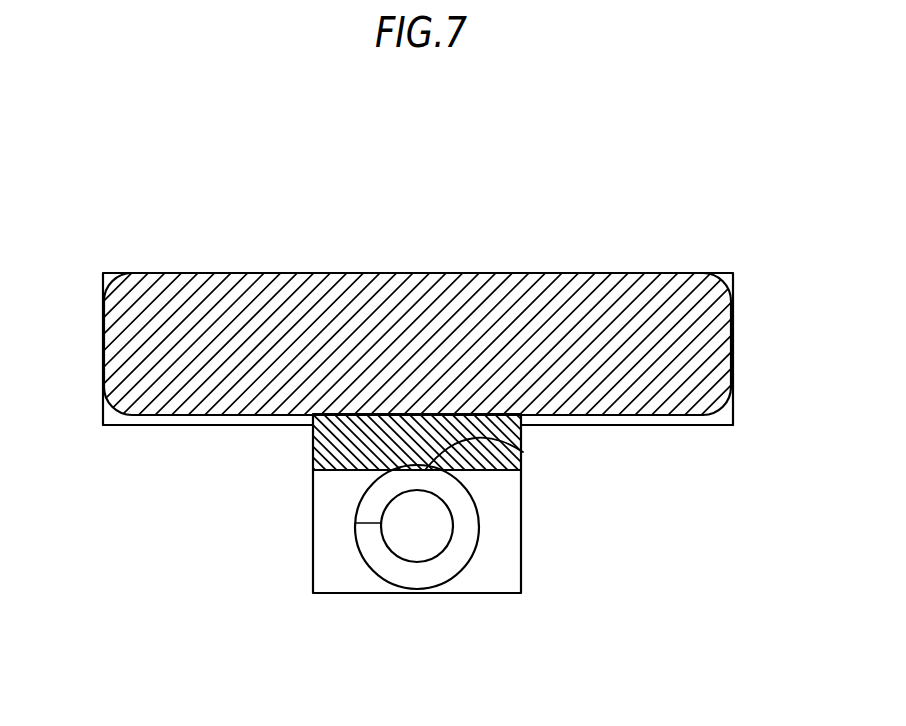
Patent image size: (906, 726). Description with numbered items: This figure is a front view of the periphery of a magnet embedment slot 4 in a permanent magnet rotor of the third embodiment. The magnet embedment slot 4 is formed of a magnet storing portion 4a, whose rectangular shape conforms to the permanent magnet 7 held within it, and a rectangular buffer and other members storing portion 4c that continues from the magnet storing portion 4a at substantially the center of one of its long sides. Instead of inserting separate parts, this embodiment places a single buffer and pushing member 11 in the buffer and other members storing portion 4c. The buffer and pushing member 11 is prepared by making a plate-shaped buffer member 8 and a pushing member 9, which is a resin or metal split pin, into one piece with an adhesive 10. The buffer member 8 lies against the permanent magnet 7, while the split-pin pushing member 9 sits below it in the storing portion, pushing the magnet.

The magnet embedment slot 4 is at (743, 295).
The magnet storing portion 4a is at (722, 412).
The buffer and other members storing portion 4c is at (500, 513).
The permanent magnet 7 is at (121, 297).
The buffer member 8 is at (323, 455).
The pushing member 9 is at (357, 549).
The adhesive 10 is at (523, 452).
The buffer and pushing member 11 is at (268, 450).